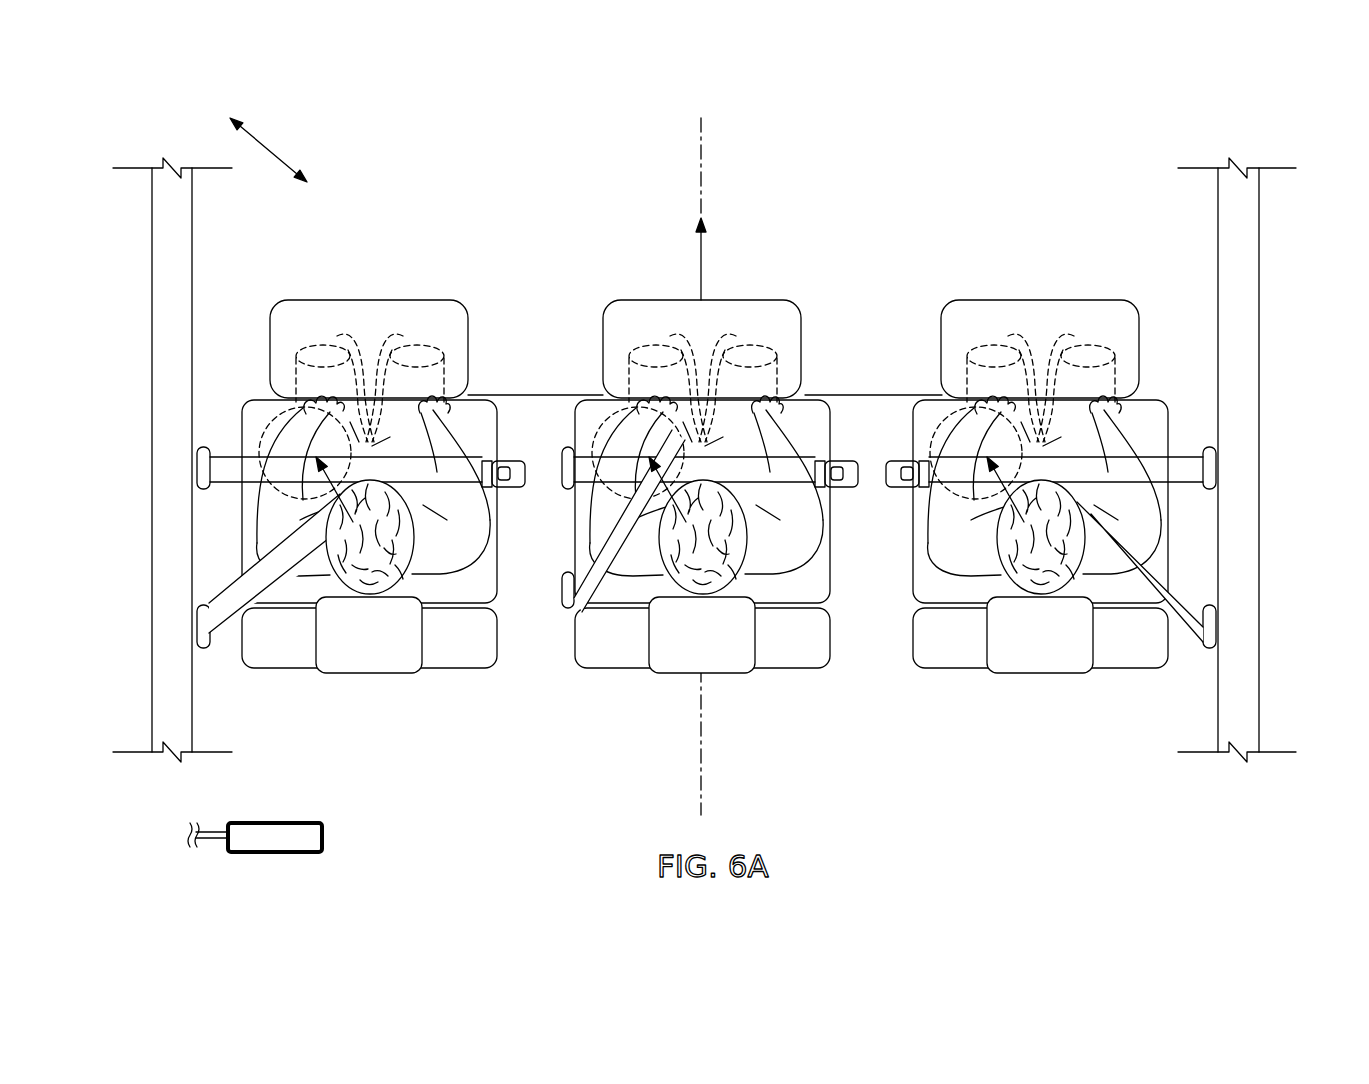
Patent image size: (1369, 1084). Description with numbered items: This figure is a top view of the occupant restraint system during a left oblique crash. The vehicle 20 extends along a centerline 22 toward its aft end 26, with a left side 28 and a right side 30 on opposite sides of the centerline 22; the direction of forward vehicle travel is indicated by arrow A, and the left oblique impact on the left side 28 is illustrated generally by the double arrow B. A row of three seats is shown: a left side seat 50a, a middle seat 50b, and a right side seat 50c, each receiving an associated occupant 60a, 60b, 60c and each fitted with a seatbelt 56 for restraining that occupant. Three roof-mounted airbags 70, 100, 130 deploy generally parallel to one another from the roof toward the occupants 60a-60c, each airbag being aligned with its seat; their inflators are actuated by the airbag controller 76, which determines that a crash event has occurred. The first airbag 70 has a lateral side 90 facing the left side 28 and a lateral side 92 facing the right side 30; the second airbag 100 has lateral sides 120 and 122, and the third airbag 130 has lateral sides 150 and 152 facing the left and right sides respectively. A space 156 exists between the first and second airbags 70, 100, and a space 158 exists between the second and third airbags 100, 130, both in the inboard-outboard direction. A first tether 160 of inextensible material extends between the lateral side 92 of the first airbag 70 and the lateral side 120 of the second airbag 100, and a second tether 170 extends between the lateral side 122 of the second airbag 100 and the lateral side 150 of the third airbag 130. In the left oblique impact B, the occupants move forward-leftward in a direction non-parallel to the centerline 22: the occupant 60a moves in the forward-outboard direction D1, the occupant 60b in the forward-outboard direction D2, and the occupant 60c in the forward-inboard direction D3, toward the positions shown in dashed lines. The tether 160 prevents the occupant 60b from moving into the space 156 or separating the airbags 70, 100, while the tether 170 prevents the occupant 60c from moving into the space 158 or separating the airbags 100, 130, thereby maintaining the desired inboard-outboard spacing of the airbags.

The vehicle 20 is at (1299, 225).
The centerline 22 is at (705, 185).
The second or aft end 26 is at (771, 765).
The left side 28 is at (91, 423).
The right side 30 is at (1310, 308).
The left side seat 50a is at (279, 655).
The middle seat 50b is at (818, 655).
The right side seat 50c is at (1140, 655).
The seatbelt 56 is at (196, 606).
The occupant 60a is at (438, 543).
The occupant 60b is at (775, 545).
The occupant 60c is at (960, 540).
The airbag 70 is at (376, 268).
The airbag controller 76 is at (274, 823).
The lateral side 90 is at (270, 356).
The lateral side 92 is at (468, 350).
The airbag 100 is at (661, 268).
The lateral side 120 is at (603, 356).
The lateral side 122 is at (805, 350).
The airbag 130 is at (1006, 268).
The lateral side 150 is at (942, 356).
The lateral side 152 is at (1142, 350).
The space 156 is at (515, 325).
The space 158 is at (857, 328).
The first tether 160 is at (522, 398).
The second tether 170 is at (868, 398).
The arrow A is at (703, 242).
The double arrow B is at (266, 150).
The forward-outboard direction D1 is at (260, 490).
The forward-outboard direction D2 is at (590, 490).
The forward-inboard direction D3 is at (1010, 510).